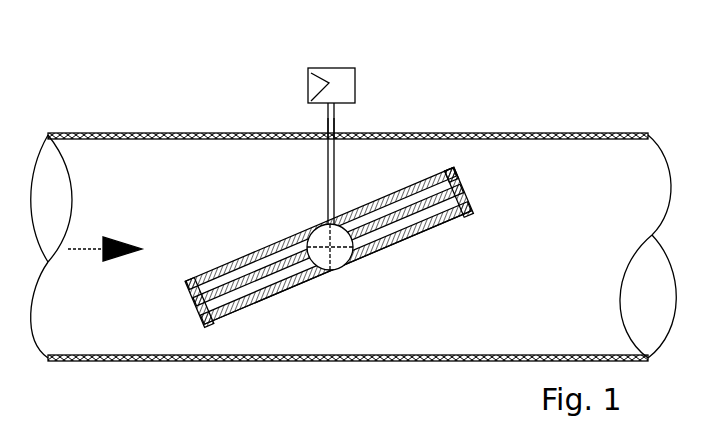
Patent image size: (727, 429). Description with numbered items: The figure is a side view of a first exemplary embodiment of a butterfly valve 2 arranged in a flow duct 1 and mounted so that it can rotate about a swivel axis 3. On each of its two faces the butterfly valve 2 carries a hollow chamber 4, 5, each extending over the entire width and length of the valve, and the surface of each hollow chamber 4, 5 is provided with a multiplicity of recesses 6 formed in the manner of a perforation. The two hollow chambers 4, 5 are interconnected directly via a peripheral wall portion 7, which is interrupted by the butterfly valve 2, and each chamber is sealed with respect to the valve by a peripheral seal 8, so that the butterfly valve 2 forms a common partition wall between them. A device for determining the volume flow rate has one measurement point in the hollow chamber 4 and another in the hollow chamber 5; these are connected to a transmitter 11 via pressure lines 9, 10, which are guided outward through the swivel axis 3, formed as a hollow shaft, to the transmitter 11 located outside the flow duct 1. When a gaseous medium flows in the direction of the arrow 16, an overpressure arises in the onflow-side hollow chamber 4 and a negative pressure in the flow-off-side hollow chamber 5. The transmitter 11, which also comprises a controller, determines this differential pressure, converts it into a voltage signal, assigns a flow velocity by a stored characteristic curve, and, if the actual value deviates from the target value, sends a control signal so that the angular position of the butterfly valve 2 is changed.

The flow duct 1 is at (527, 133).
The butterfly valve 2 is at (374, 214).
The swivel axis 3 is at (336, 253).
The hollow chamber 4 is at (328, 245).
The hollow chamber 5 is at (337, 267).
The recesses 6 is at (328, 246).
The peripheral wall portion 7 is at (459, 192).
The peripheral seal 8 is at (452, 174).
The pressure line 9 is at (334, 123).
The pressure line 10 is at (328, 123).
The transmitter 11 is at (322, 68).
The arrow 16 is at (80, 249).